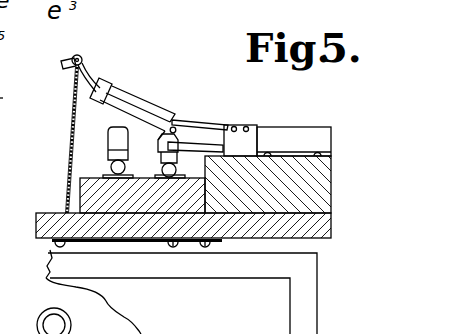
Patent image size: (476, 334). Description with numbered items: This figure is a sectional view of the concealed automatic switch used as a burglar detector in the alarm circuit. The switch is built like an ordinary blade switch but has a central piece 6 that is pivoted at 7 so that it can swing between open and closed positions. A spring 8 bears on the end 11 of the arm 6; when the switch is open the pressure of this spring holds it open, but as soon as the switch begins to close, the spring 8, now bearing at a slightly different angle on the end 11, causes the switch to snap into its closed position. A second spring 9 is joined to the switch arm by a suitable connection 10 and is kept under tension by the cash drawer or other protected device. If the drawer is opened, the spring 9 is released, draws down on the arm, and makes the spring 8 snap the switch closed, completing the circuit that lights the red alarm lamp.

The central piece 6 is at (141, 112).
The pivot 7 is at (198, 109).
The spring 8 is at (188, 124).
The second spring 9 is at (142, 241).
The connection 10 is at (68, 148).
The end of the arm 11 is at (178, 140).